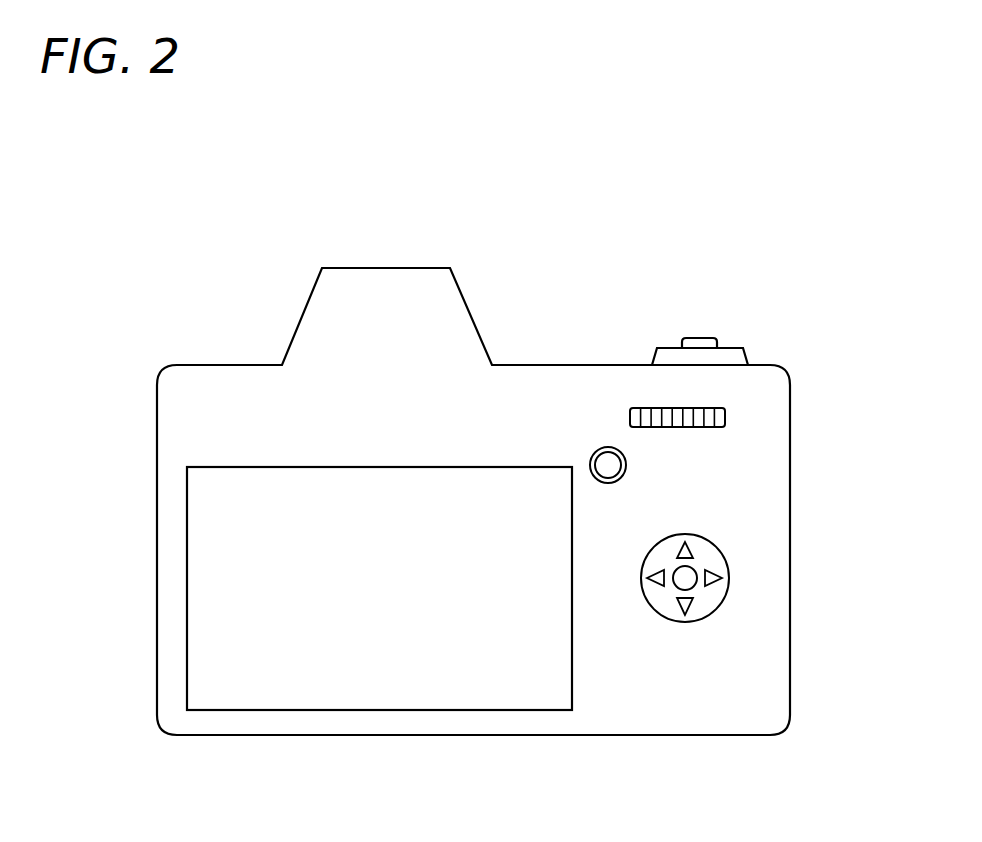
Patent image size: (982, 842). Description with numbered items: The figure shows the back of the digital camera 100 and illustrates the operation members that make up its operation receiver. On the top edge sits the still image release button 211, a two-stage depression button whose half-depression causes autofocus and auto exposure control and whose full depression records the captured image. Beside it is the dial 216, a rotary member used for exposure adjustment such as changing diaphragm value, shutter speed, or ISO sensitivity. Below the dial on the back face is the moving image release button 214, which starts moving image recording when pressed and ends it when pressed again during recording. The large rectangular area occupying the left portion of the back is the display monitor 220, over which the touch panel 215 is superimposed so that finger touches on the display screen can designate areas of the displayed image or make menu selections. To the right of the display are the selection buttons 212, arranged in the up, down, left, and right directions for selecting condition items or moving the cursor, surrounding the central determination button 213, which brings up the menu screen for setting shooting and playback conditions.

The digital camera 100 is at (246, 261).
The still image release button 211 is at (703, 340).
The selection buttons 212 is at (697, 536).
The determination button 213 is at (695, 588).
The moving image release button 214 is at (600, 449).
The touch panel 215 is at (222, 588).
The dial 216 is at (715, 408).
The display monitor 220 is at (222, 463).